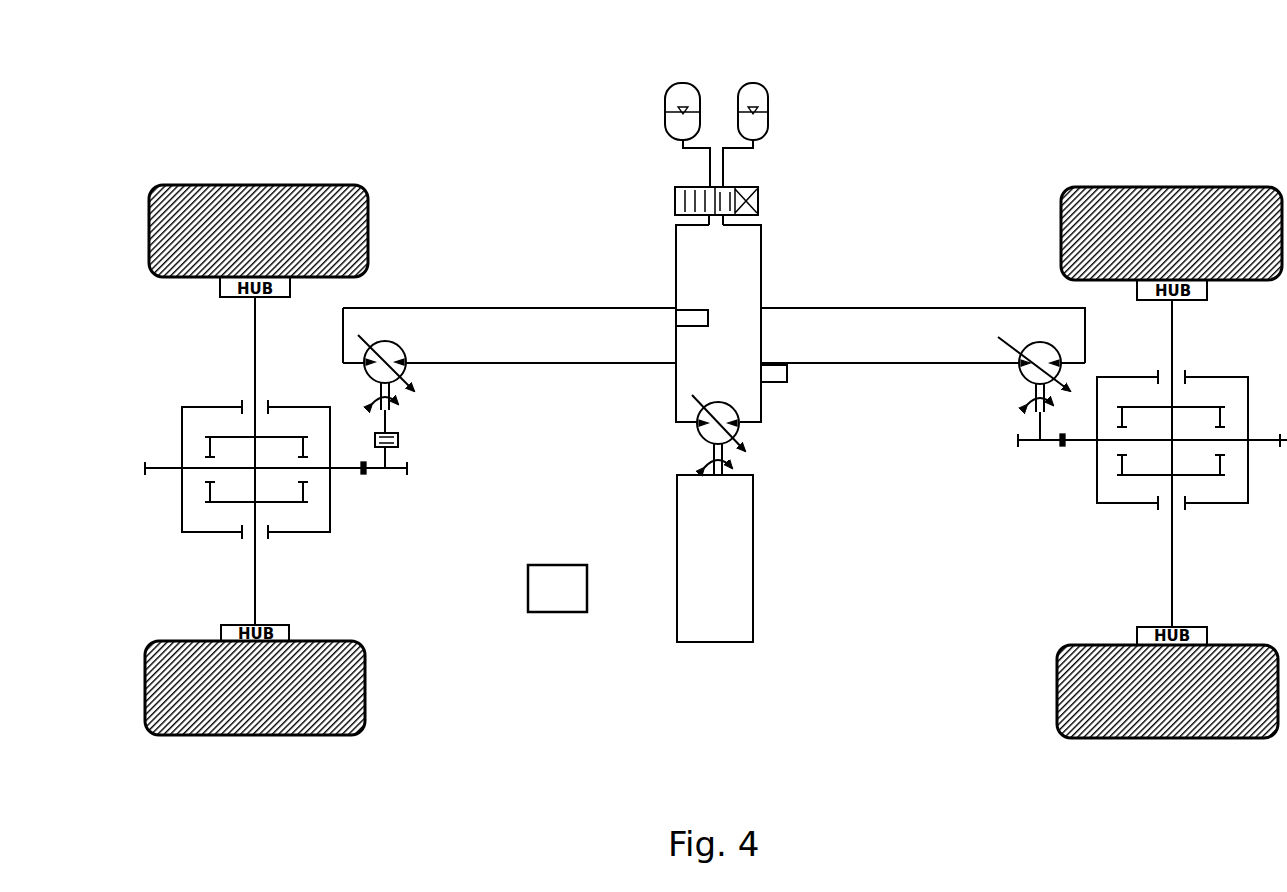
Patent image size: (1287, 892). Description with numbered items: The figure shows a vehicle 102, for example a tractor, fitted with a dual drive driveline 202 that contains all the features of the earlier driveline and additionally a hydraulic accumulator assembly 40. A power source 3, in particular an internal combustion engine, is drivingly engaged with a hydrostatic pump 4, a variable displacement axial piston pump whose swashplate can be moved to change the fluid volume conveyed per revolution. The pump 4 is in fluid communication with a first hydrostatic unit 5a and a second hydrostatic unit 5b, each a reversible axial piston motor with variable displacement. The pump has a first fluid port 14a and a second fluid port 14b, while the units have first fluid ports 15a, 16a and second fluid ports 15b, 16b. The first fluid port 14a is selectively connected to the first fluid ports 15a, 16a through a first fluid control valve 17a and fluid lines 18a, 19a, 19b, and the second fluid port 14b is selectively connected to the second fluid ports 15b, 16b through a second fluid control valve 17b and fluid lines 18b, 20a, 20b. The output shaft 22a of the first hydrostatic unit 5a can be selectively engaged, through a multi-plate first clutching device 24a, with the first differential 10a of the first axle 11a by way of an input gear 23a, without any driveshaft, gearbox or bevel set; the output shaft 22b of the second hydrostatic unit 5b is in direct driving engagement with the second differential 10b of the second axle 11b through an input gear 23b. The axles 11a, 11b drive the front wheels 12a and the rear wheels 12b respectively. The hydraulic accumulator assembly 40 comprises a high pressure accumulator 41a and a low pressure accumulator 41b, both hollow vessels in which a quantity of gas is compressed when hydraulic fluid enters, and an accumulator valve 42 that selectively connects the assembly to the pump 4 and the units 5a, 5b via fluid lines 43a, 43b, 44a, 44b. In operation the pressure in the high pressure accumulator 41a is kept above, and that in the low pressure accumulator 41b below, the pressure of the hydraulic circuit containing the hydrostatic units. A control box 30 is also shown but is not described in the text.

The vehicle 102 is at (430, 103).
The dual drive driveline 202 is at (919, 540).
The power source 3 is at (753, 630).
The hydrostatic pump 4 is at (812, 468).
The first hydrostatic unit 5a is at (453, 386).
The second hydrostatic unit 5b is at (998, 382).
The first differential 10a is at (208, 533).
The second differential 10b is at (1120, 503).
The first axle 11a is at (252, 332).
The second axle 11b is at (1170, 343).
The front wheels 12a is at (184, 185).
The rear wheels 12b is at (1133, 187).
The first fluid port of the hydrostatic pump 14a is at (690, 447).
The second fluid port of the hydrostatic pump 14b is at (745, 432).
The first fluid port of the first hydrostatic unit 15a is at (360, 368).
The second fluid port of the first hydrostatic unit 15b is at (415, 348).
The first fluid port of the second hydrostatic unit 16a is at (1070, 352).
The second fluid port of the second hydrostatic unit 16b is at (1020, 360).
The first fluid control valve 17a is at (708, 316).
The second fluid control valve 17b is at (787, 372).
The fluid line 18a is at (672, 383).
The fluid line 18b is at (752, 412).
The fluid line 19a is at (520, 307).
The fluid line 19b is at (893, 307).
The fluid line 20a is at (535, 362).
The fluid line 20b is at (868, 362).
The output shaft of the first hydrostatic unit 22a is at (393, 478).
The output shaft of the second hydrostatic unit 22b is at (1030, 448).
The input gear of the first differential 23a is at (350, 478).
The input gear of the second differential 23b is at (1083, 444).
The first clutching device 24a is at (422, 443).
The controller 30 is at (553, 615).
The hydraulic accumulator assembly 40 is at (850, 127).
The high pressure accumulator 41a is at (680, 84).
The low pressure accumulator 41b is at (765, 84).
The accumulator valve 42 is at (760, 205).
The fluid line 43a is at (700, 163).
The fluid line 43b is at (728, 165).
The fluid line 44a is at (672, 262).
The fluid line 44b is at (765, 268).